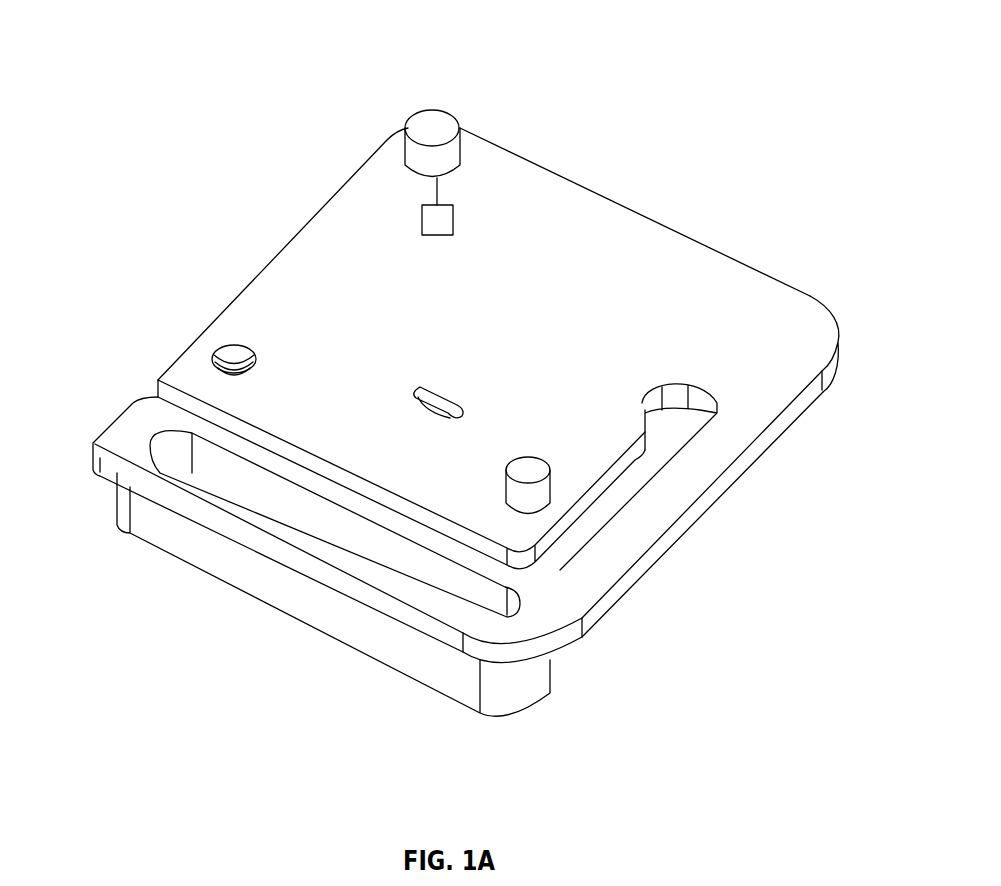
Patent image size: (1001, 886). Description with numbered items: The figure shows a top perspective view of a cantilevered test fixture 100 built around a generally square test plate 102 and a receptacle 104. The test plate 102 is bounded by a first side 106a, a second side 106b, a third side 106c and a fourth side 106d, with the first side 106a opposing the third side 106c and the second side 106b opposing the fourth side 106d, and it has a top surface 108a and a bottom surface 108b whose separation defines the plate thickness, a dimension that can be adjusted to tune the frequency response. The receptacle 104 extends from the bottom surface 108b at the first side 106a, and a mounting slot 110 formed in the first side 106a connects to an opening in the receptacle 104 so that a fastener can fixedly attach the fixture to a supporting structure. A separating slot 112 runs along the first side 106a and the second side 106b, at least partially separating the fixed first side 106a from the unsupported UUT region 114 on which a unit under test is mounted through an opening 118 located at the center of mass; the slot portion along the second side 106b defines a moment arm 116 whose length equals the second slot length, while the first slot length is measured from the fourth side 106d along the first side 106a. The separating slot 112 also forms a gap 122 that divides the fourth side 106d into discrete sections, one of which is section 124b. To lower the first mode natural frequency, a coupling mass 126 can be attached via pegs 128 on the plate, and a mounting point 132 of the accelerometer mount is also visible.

The cantilevered test fixture 100 is at (136, 40).
The test plate 102 is at (446, 331).
The receptacle 104 is at (228, 578).
The first side 106a is at (185, 510).
The second side 106b is at (694, 520).
The third side 106c is at (517, 152).
The fourth side 106d is at (246, 236).
The top surface 108a is at (806, 307).
The bottom surface 108b is at (806, 401).
The mounting slot 110 is at (170, 454).
The separating slot 112 is at (578, 546).
The UUT region 114 is at (481, 283).
The moment arm 116 is at (684, 582).
The opening 118 is at (447, 390).
The gap 122 is at (152, 385).
The section 124b is at (340, 188).
The coupling mass 126 is at (455, 215).
The peg 128 is at (440, 120).
The mounting point 132 is at (226, 344).